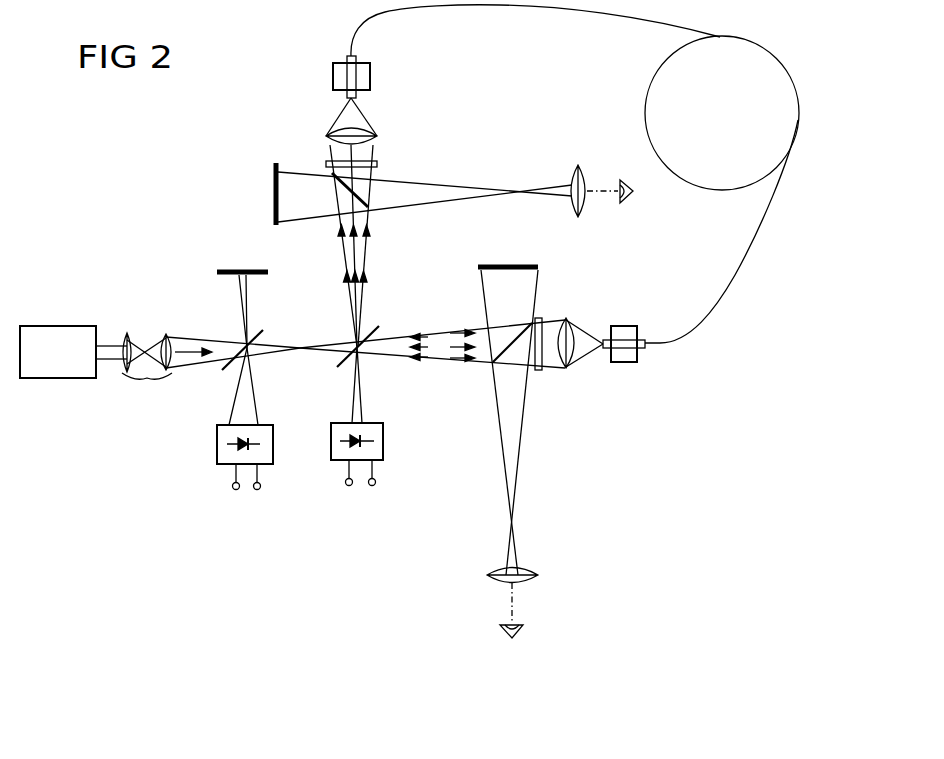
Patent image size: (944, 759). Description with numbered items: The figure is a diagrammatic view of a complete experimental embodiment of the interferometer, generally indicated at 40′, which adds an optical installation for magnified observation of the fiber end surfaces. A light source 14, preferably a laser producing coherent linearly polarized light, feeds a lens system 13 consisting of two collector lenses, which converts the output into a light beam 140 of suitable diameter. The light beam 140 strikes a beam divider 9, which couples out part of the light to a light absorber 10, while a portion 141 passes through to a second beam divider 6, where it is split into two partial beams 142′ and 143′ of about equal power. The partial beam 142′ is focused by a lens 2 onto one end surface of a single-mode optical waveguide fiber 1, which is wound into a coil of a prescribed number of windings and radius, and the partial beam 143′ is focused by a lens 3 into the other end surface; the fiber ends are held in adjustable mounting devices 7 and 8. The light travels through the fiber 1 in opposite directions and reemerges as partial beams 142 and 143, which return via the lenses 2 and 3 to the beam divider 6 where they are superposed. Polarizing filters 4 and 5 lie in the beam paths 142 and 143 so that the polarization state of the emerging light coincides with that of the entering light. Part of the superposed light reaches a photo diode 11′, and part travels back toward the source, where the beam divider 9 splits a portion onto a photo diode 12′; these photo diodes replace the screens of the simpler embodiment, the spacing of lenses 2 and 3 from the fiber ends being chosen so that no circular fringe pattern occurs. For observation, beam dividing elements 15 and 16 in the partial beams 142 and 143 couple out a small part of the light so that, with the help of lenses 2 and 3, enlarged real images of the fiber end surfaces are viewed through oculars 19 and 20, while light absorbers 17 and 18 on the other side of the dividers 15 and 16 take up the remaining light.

The single-mode optical waveguide fiber 1 is at (726, 283).
The lens 2 is at (580, 328).
The lens 3 is at (359, 122).
The polarizing filter 4 is at (541, 329).
The polarizing filter 5 is at (359, 161).
The beam divider 6 is at (362, 334).
The adjustable mounting device 7 is at (357, 77).
The adjustable mounting device 8 is at (624, 329).
The beam divider 9 is at (246, 335).
The light absorber 10 is at (242, 332).
The photo diode 11′ is at (369, 416).
The photo diode 12′ is at (230, 457).
The lens system 13 is at (147, 371).
The light source 14 is at (73, 338).
The beam dividing element 15 is at (493, 363).
The beam dividing element 16 is at (372, 209).
The light absorber 17 is at (508, 405).
The light absorber 18 is at (412, 192).
The ocular 19 is at (500, 600).
The ocular 20 is at (600, 176).
The interferometer 40′ is at (224, 201).
The light beam 140 is at (200, 339).
The portion of the light beam 141 is at (297, 347).
The partial beam 142 is at (418, 363).
The partial beam 142′ is at (457, 333).
The partial beam 143 is at (345, 279).
The partial beam 143′ is at (371, 237).